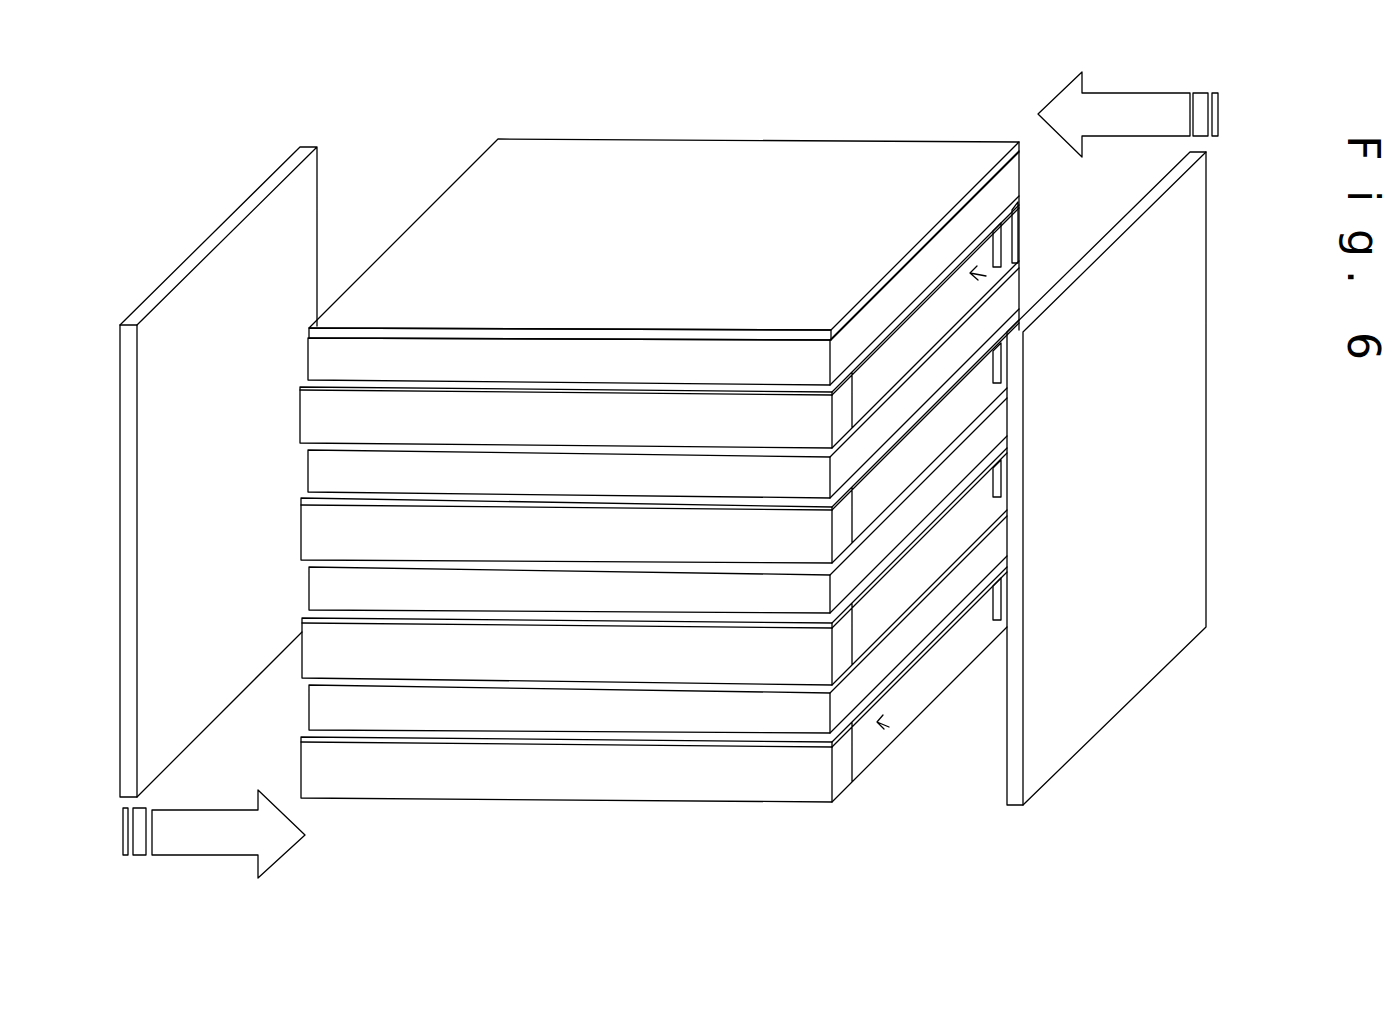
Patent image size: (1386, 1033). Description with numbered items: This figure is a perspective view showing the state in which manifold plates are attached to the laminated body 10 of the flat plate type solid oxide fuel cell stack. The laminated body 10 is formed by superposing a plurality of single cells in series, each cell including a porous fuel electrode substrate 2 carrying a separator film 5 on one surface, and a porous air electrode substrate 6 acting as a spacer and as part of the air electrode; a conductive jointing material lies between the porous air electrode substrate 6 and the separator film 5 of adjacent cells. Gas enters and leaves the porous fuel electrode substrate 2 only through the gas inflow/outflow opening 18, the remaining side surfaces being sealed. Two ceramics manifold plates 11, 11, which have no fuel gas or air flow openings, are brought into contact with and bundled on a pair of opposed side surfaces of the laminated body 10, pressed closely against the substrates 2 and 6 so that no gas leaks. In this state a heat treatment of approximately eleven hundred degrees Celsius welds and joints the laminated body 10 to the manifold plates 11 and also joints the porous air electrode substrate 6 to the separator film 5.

The porous fuel electrode substrate 2 is at (920, 323).
The separator film 5 is at (960, 320).
The porous air electrode substrate 6 is at (933, 255).
The laminated body 10 is at (831, 128).
The manifold plate 11 is at (148, 713).
The gas inflow/outflow opening 18 is at (1022, 235).